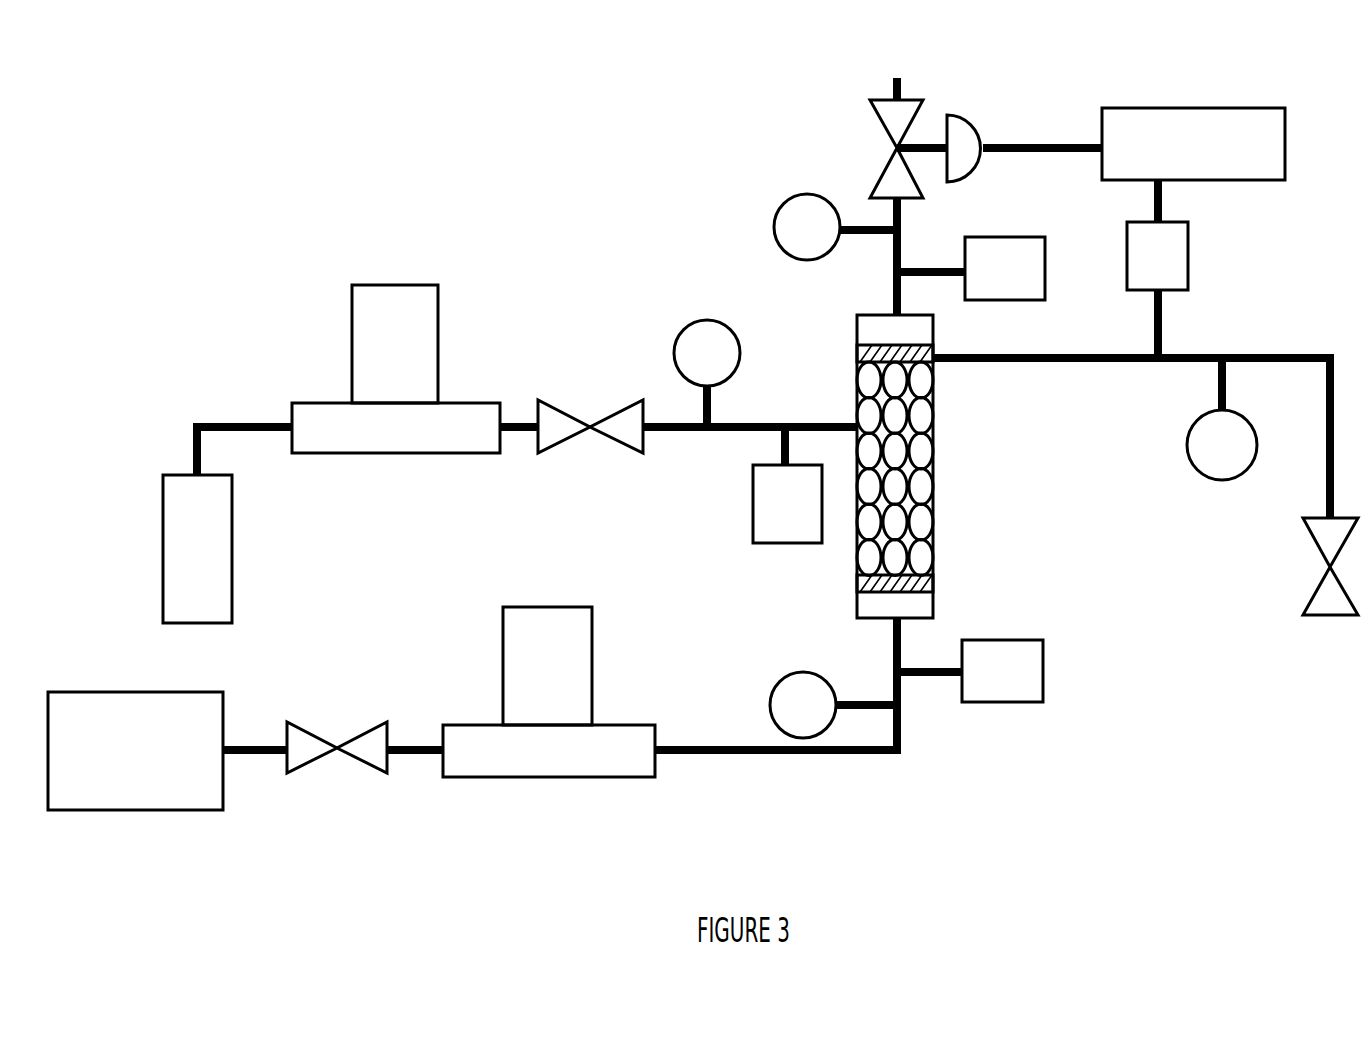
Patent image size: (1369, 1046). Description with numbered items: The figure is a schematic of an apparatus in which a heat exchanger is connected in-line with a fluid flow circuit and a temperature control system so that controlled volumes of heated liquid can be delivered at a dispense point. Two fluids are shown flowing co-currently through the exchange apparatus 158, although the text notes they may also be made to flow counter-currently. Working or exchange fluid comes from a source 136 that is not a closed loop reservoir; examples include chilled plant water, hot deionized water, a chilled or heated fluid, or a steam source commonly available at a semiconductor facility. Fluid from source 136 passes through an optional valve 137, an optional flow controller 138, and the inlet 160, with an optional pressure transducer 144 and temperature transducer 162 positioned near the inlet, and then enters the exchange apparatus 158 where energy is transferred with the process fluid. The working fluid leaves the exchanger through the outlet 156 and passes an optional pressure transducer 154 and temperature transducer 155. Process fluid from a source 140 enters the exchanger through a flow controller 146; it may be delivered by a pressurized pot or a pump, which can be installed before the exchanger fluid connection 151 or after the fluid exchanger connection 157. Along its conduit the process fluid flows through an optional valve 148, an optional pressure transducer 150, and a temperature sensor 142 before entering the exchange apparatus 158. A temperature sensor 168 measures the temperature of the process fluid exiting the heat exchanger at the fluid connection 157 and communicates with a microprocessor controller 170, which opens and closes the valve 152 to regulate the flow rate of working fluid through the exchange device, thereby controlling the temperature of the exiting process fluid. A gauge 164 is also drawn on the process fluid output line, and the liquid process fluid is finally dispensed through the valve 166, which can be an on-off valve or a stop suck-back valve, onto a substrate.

The source of working fluid 136 is at (160, 692).
The valve 137 is at (320, 738).
The flow controller 138 is at (548, 607).
The source of process fluid 140 is at (163, 590).
The temperature sensor 142 is at (753, 517).
The pressure transducer 144 is at (786, 708).
The flow controller 146 is at (352, 352).
The valve 148 is at (592, 415).
The pressure transducer 150 is at (704, 332).
The exchanger fluid connection 151 is at (836, 417).
The valve 152 is at (878, 112).
The pressure transducer 154 is at (790, 232).
The temperature transducer 155 is at (1045, 270).
The outlet 156 is at (892, 302).
The fluid exchanger connection 157 is at (937, 362).
The exchange apparatus 158 is at (937, 434).
The inlet 160 is at (900, 628).
The temperature transducer 162 is at (1010, 688).
The pressure gauge 164 is at (1222, 460).
The valve 166 is at (1330, 555).
The temperature sensor 168 is at (1188, 278).
The microprocessor controller 170 is at (1285, 162).